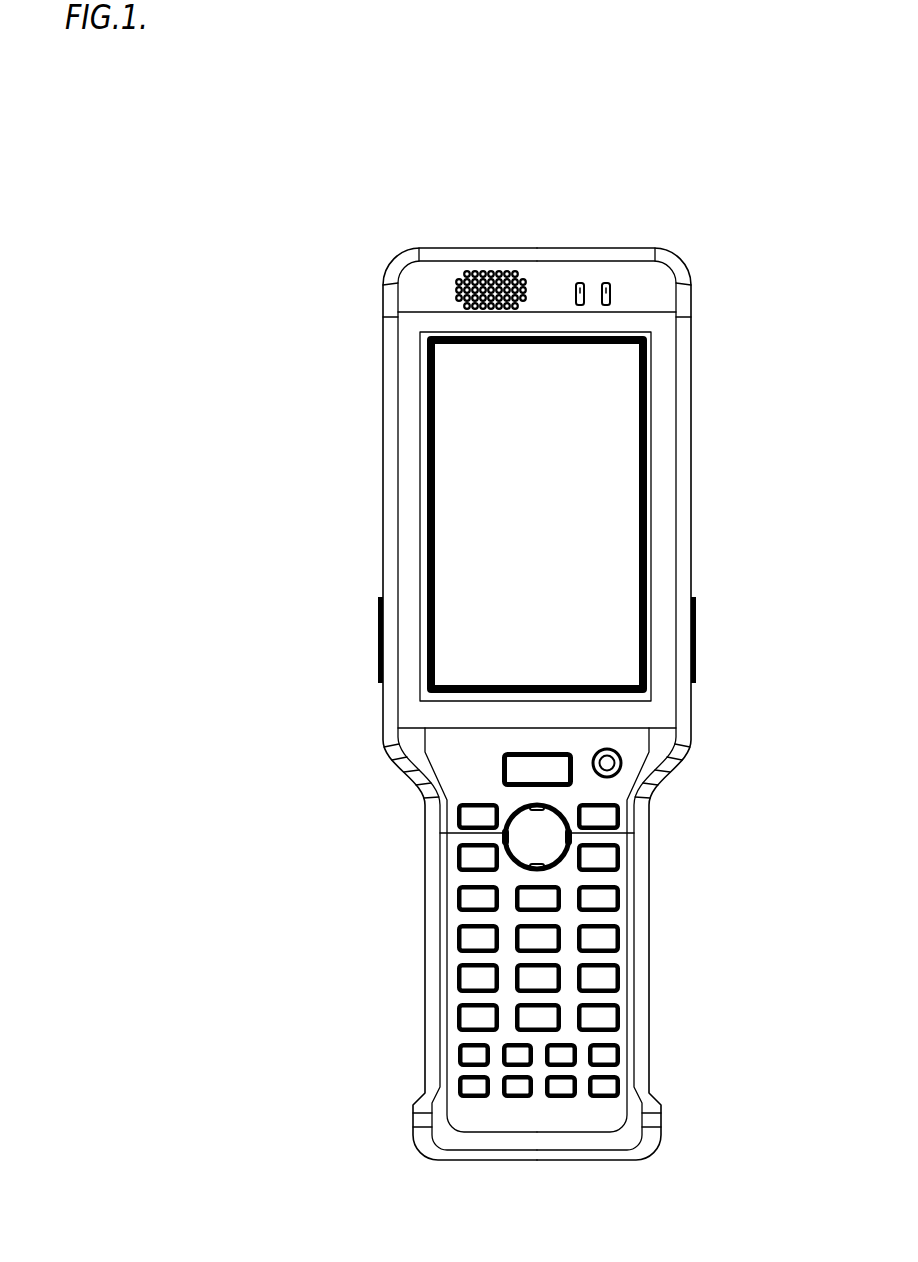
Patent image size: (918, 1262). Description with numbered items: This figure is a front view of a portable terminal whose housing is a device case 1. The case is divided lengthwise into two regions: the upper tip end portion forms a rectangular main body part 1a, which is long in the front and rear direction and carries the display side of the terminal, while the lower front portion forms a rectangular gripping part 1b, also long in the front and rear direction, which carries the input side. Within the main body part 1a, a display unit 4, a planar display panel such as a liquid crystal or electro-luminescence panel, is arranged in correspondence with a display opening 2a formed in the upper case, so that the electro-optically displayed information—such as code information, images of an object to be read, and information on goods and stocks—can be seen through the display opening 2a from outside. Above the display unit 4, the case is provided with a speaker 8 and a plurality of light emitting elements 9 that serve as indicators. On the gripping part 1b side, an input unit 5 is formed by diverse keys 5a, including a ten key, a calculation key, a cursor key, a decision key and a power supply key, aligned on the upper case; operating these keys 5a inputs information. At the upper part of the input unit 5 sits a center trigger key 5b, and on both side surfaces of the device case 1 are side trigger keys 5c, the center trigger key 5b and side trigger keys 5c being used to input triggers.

The device case 1 is at (385, 254).
The main body part 1a is at (396, 490).
The gripping part 1b is at (425, 988).
The display opening 2a is at (640, 478).
The display unit 4 is at (612, 410).
The input unit 5 is at (524, 922).
The keys 5a is at (617, 763).
The center trigger key 5b is at (517, 767).
The side trigger keys 5c is at (378, 651).
The speaker 8 is at (482, 271).
The light emitting elements 9 is at (606, 282).